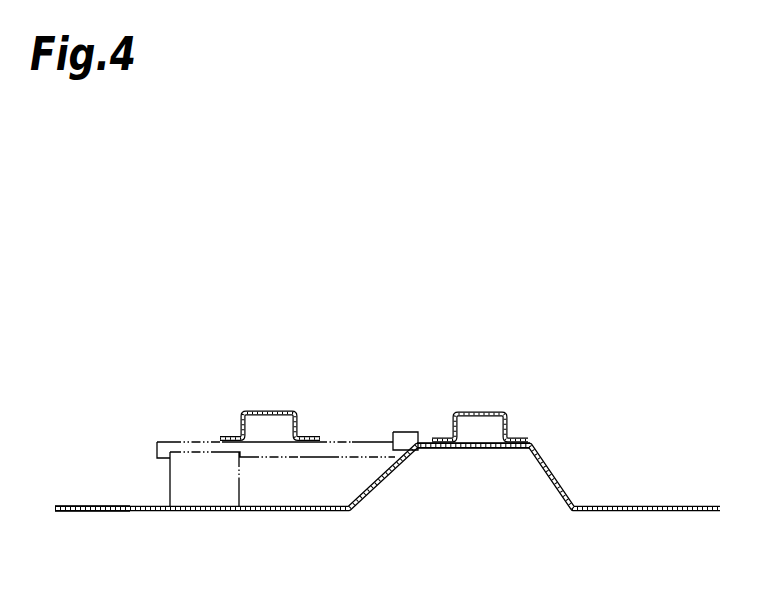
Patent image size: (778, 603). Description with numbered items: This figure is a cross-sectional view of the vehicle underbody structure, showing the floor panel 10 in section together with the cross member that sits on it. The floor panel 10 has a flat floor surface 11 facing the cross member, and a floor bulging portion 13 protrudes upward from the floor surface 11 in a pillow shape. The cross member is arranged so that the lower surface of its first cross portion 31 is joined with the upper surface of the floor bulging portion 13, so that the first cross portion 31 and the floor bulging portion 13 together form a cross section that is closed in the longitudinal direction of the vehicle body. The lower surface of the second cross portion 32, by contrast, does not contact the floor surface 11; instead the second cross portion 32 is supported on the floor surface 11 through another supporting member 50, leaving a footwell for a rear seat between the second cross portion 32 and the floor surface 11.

The floor panel 10 is at (592, 494).
The floor surface 11 is at (128, 505).
The floor bulging portion 13 is at (483, 441).
The first cross portion 31 is at (480, 412).
The second cross portion 32 is at (273, 412).
The supporting member 50 is at (282, 473).